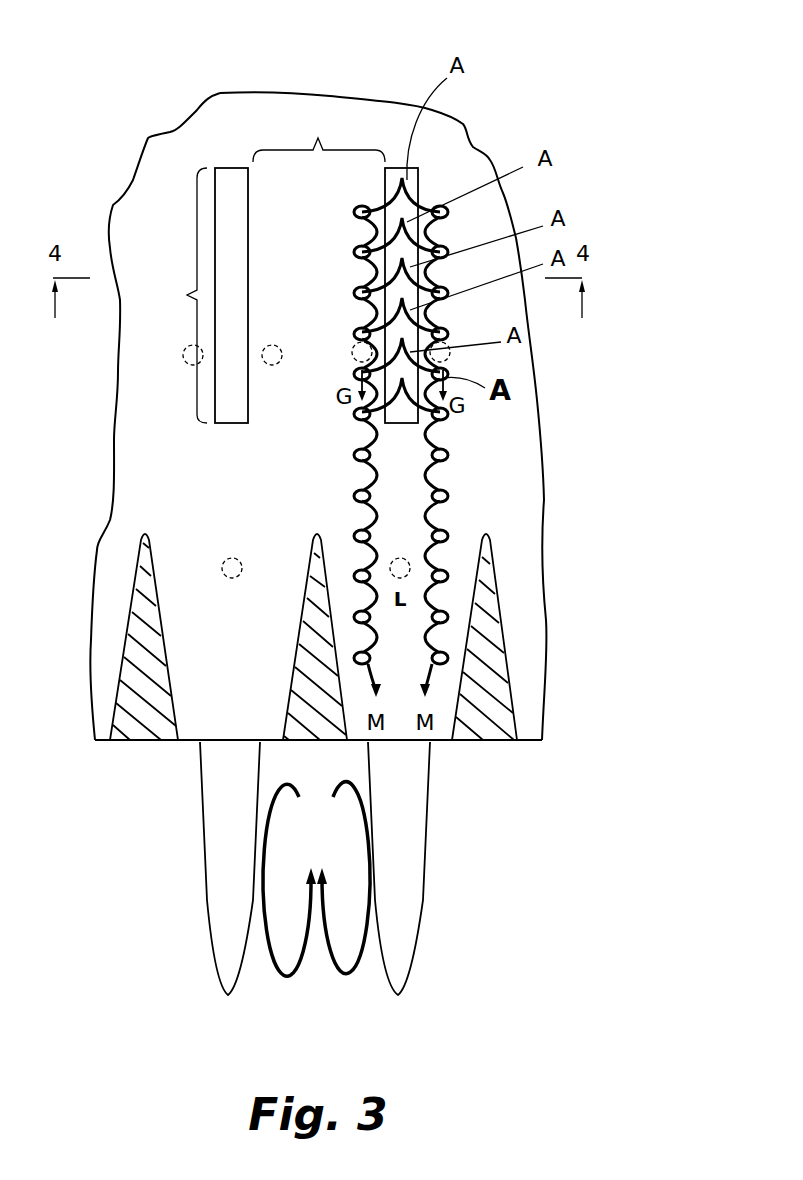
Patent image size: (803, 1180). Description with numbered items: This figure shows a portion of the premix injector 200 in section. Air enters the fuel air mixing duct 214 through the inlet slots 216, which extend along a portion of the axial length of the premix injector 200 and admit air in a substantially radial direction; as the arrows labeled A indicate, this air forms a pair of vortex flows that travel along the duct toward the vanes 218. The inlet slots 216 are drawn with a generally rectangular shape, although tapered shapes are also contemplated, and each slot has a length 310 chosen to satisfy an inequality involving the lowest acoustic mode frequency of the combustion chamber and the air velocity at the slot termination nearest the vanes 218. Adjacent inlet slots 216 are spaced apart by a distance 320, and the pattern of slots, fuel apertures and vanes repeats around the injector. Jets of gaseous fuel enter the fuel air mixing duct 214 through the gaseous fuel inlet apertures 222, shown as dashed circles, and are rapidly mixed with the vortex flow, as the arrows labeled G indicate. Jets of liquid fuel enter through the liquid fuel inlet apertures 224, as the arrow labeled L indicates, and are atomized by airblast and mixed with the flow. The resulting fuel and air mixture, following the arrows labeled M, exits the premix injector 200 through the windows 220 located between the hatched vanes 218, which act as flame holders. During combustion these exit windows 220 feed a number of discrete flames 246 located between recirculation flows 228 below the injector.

The premix injector 200 is at (336, 384).
The fuel air mixing duct 214 is at (278, 449).
The inlet slots 216 is at (385, 182).
The vanes 218 is at (153, 643).
The windows 220 is at (222, 742).
The gaseous fuel inlet apertures 222 is at (186, 363).
The liquid fuel inlet apertures 224 is at (232, 557).
The recirculation flows 228 is at (289, 975).
The discrete flames 246 is at (208, 912).
The length 310 is at (173, 295).
The distance 320 is at (319, 134).